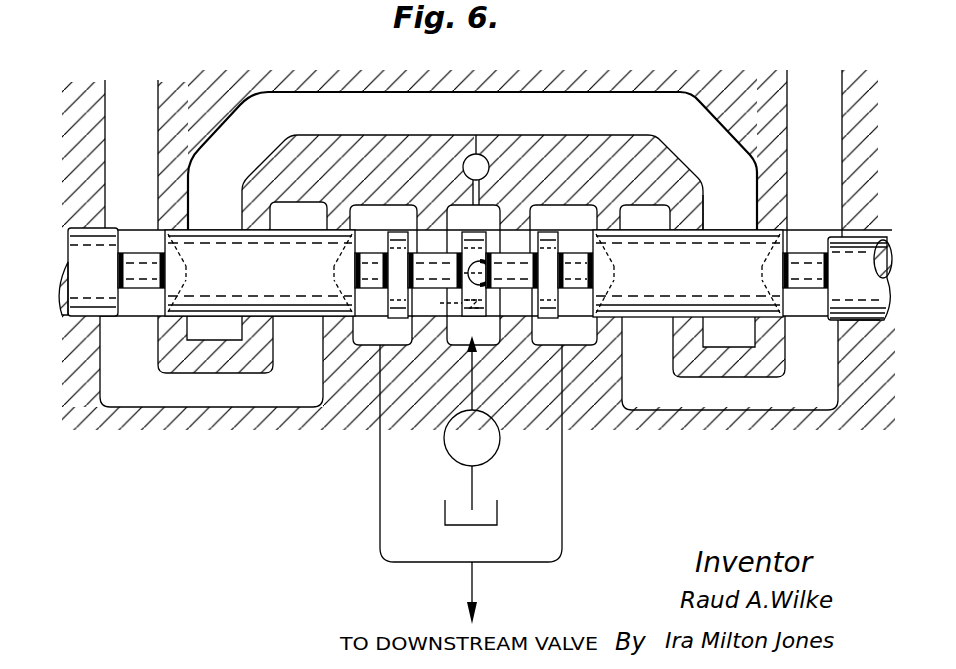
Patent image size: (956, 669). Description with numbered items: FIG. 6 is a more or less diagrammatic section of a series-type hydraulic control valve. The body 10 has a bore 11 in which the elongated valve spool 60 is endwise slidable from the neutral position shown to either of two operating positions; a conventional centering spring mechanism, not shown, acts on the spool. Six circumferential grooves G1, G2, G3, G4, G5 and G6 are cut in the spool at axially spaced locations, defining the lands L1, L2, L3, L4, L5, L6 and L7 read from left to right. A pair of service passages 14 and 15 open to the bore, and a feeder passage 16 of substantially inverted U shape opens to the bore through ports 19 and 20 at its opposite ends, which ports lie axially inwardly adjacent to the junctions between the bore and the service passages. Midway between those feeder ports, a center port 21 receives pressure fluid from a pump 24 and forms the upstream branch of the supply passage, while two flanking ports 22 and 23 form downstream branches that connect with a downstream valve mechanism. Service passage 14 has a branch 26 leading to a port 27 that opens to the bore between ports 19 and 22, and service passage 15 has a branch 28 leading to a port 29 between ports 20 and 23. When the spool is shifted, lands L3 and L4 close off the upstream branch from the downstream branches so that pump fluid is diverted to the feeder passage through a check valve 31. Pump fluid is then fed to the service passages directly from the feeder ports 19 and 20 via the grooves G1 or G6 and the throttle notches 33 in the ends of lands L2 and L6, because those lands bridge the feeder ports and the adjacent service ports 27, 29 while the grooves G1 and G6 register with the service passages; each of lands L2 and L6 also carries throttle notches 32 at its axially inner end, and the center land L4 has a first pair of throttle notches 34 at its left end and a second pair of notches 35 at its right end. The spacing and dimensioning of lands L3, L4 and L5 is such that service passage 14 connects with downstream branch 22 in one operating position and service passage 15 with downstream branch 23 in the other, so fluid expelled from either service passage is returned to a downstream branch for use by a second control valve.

The body 10 is at (697, 69).
The bore 11 is at (701, 232).
The service passage 14 is at (135, 152).
The service passage 15 is at (822, 152).
The feeder passage 16 is at (420, 122).
The feeder port 19 is at (190, 222).
The feeder port 20 is at (706, 222).
The center port 21 is at (488, 347).
The flanking port 22 is at (397, 346).
The flanking port 23 is at (580, 343).
The pump 24 is at (500, 441).
The branch 26 is at (228, 401).
The port 27 is at (313, 212).
The branch 28 is at (748, 401).
The port 29 is at (662, 209).
The check valve 31 is at (481, 156).
The throttle notches 32 is at (618, 271).
The throttle notches 33 is at (760, 271).
The throttle notches 34 is at (463, 226).
The throttle notches 35 is at (491, 299).
The valve spool 60 is at (863, 320).
The land L1 is at (98, 283).
The land L2 is at (260, 283).
The land L3 is at (397, 232).
The center land L4 is at (477, 263).
The land L5 is at (545, 218).
The land L6 is at (686, 283).
The land L7 is at (860, 286).
The groove G1 is at (160, 298).
The groove G2 is at (375, 294).
The groove G3 is at (435, 263).
The groove G4 is at (512, 263).
The groove G5 is at (586, 341).
The groove G6 is at (810, 298).